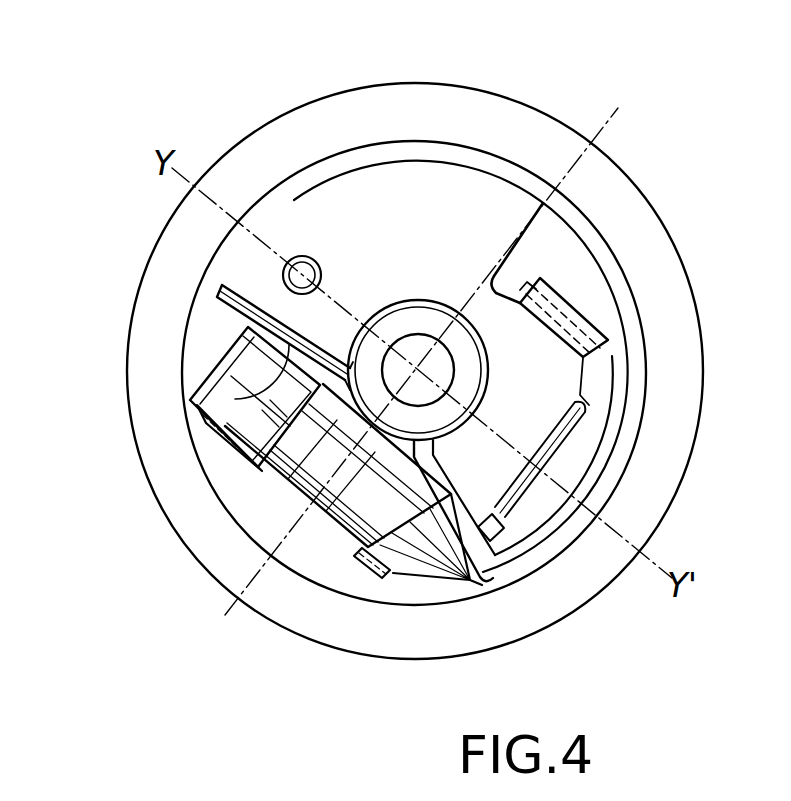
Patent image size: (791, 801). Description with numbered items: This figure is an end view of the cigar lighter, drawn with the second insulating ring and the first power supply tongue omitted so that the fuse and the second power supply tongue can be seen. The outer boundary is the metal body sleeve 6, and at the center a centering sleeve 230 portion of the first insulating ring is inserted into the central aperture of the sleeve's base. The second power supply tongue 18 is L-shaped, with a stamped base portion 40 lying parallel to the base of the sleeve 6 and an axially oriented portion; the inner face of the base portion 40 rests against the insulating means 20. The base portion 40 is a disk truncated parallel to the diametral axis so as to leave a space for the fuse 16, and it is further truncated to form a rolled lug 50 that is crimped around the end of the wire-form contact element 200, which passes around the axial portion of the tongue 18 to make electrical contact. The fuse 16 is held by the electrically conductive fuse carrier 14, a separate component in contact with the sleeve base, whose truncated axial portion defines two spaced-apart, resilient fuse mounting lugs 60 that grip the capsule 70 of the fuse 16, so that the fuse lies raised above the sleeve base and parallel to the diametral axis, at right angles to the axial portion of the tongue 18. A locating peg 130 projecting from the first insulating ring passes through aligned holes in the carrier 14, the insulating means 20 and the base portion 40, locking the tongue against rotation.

The body sleeve 6 is at (705, 350).
The fuse carrier 14 is at (195, 398).
The fuse 16 is at (328, 526).
The second power supply tongue 18 is at (563, 517).
The insulating means 20 is at (238, 305).
The base portion 40 is at (480, 213).
The rolled lug 50 is at (571, 306).
The fuse mounting lugs 60 is at (214, 434).
The capsule 70 is at (300, 490).
The locating peg 130 is at (302, 275).
The contact element 200 is at (487, 584).
The centering sleeve 230 is at (410, 325).